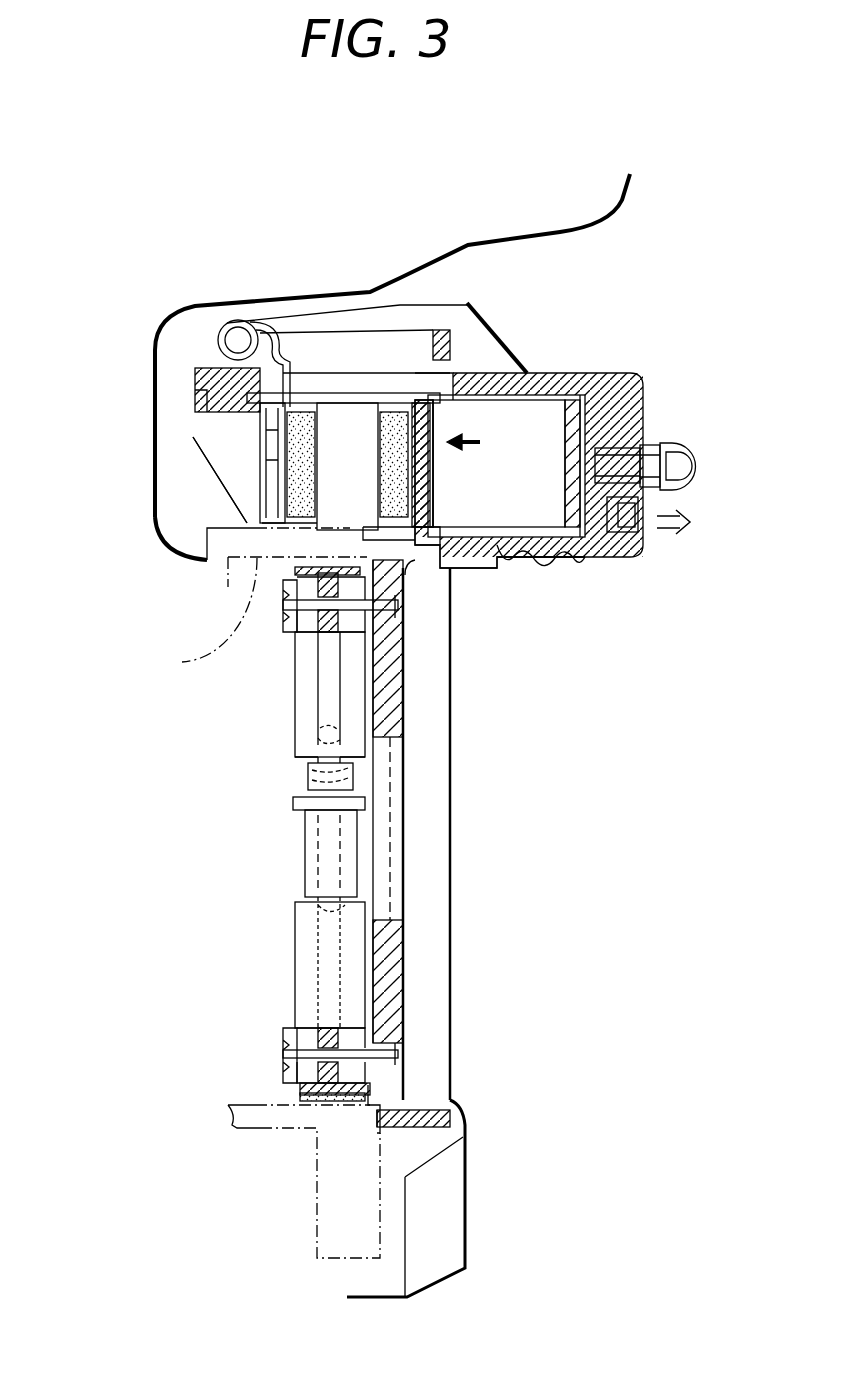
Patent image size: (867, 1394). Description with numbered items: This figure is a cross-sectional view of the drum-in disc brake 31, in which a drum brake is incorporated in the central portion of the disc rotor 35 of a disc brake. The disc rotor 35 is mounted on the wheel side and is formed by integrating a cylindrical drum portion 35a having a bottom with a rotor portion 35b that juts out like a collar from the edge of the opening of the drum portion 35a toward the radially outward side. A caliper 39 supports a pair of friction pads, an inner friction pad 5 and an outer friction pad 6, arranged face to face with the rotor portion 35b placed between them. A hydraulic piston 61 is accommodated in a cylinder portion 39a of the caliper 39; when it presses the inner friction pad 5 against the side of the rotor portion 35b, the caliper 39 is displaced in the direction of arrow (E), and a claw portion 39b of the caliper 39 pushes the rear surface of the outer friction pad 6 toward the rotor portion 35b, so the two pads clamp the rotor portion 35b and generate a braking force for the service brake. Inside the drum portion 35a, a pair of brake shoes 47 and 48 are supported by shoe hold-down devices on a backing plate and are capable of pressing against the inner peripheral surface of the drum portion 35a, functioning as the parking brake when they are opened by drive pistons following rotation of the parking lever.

The caliper 39 is at (497, 340).
The cylinder portion 39a is at (600, 380).
The claw portion 39b is at (213, 450).
The outer friction pad 6 is at (297, 465).
The disc rotor 35 is at (113, 598).
The rotor portion 35b is at (323, 488).
The drum portion 35a is at (190, 655).
The brake shoe 48 is at (305, 693).
The brake shoe 47 is at (305, 972).
The drum-in disc brake 31 is at (453, 890).
The inner friction pad 5 is at (500, 553).
The hydraulic piston 61 is at (528, 532).